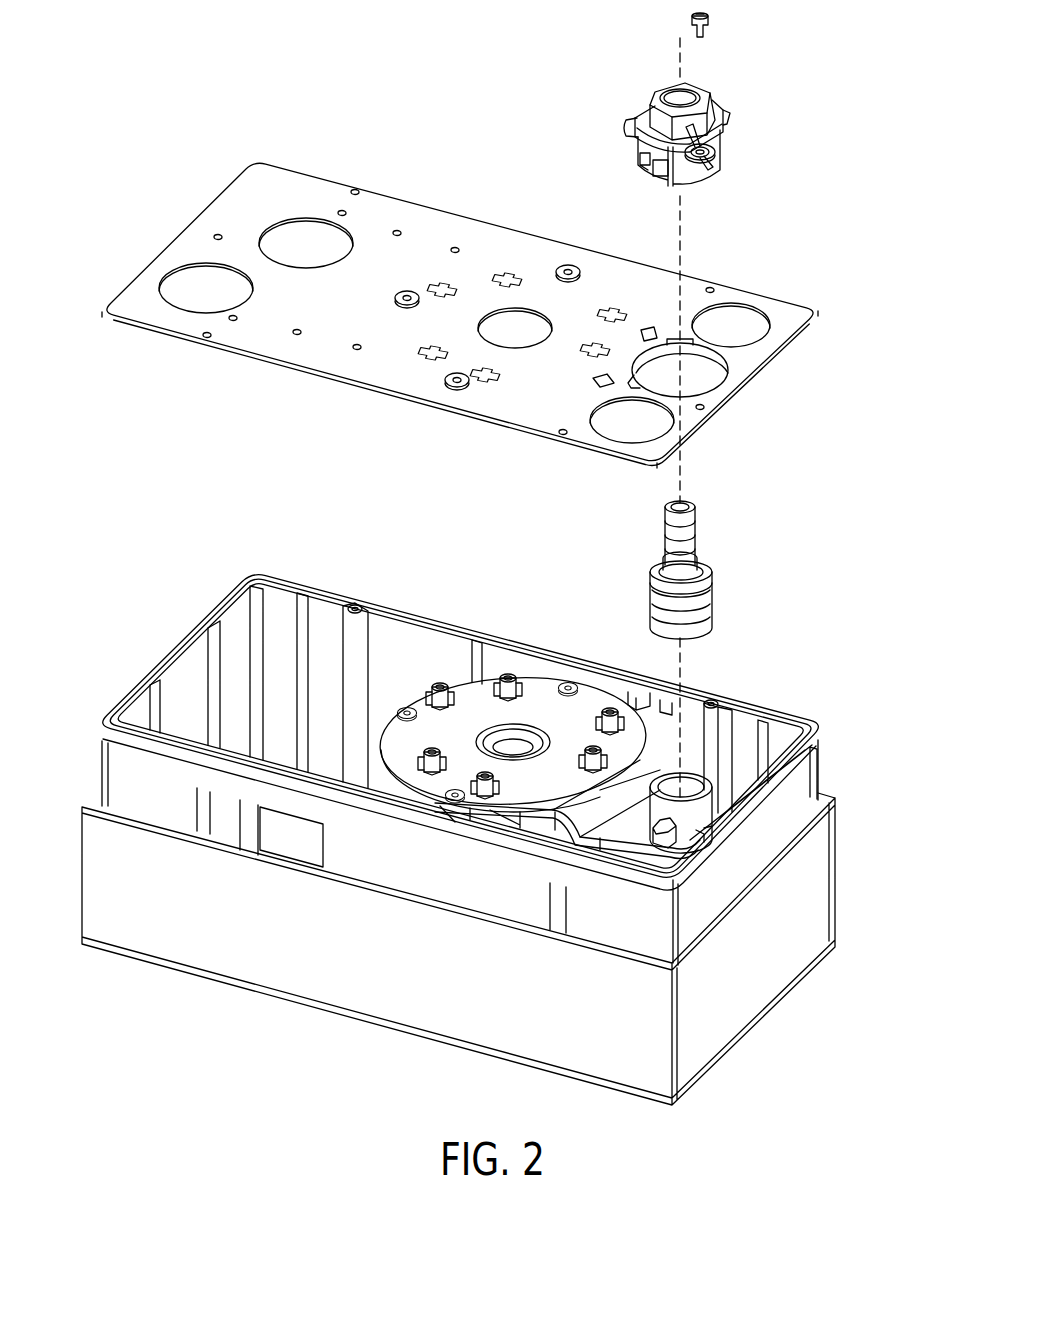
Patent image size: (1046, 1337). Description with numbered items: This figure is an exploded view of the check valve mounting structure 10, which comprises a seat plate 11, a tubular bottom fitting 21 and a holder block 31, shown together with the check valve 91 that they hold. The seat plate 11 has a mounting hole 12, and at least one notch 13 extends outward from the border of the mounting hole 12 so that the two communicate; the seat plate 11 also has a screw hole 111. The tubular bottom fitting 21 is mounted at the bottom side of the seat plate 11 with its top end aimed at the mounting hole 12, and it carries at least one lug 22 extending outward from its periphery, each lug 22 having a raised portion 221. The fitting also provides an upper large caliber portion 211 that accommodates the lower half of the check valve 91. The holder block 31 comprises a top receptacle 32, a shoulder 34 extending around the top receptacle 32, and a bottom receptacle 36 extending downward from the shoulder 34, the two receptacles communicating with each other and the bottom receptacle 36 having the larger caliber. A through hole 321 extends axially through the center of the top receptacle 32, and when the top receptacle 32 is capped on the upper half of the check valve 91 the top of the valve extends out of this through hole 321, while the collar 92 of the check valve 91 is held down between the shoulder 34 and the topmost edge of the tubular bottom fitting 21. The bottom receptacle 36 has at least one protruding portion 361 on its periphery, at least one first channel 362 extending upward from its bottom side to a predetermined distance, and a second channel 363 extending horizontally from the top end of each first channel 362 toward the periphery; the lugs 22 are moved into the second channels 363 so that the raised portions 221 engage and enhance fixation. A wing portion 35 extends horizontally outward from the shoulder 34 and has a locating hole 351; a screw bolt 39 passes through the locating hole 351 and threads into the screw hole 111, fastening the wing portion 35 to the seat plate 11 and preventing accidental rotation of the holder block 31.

The check valve mounting structure 10 is at (480, 344).
The seat plate 11 is at (738, 290).
The screw hole 111 is at (703, 410).
The mounting hole 12 is at (712, 378).
The notch 13 is at (700, 320).
The tubular bottom fitting 21 is at (471, 840).
The upper large caliber portion 211 is at (703, 813).
The lug 22 is at (650, 848).
The raised portion 221 is at (670, 840).
The holder block 31 is at (672, 122).
The top receptacle 32 is at (705, 81).
The through hole 321 is at (673, 92).
The shoulder 34 is at (643, 103).
The wing portion 35 is at (722, 163).
The locating hole 351 is at (697, 162).
The bottom receptacle 36 is at (678, 190).
The protruding portion 361 is at (630, 122).
The first channel 362 is at (650, 168).
The second channel 363 is at (647, 178).
The screw bolt 39 is at (712, 28).
The check valve 91 is at (718, 570).
The collar 92 is at (714, 588).